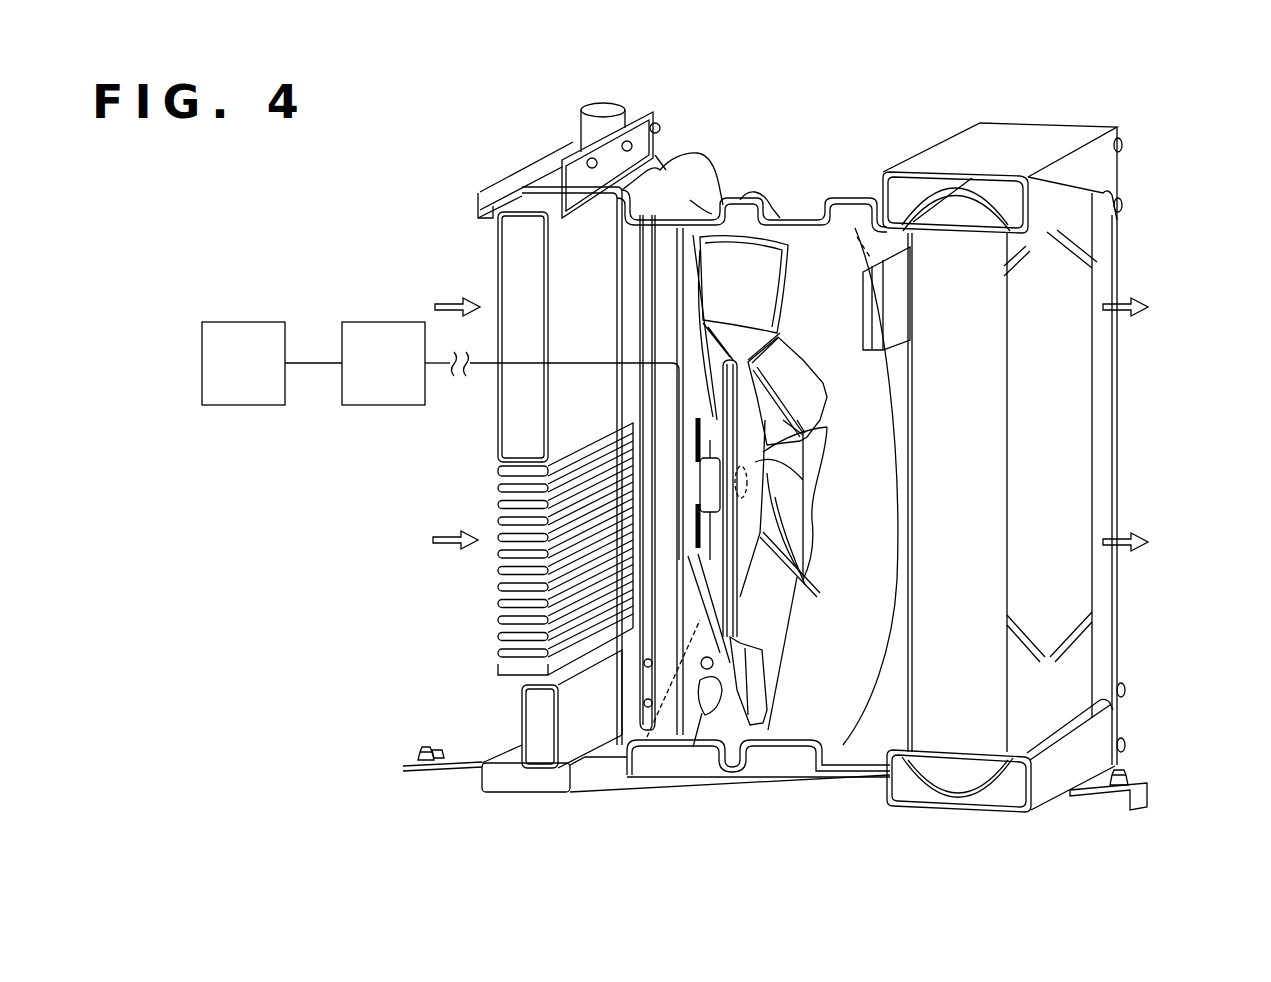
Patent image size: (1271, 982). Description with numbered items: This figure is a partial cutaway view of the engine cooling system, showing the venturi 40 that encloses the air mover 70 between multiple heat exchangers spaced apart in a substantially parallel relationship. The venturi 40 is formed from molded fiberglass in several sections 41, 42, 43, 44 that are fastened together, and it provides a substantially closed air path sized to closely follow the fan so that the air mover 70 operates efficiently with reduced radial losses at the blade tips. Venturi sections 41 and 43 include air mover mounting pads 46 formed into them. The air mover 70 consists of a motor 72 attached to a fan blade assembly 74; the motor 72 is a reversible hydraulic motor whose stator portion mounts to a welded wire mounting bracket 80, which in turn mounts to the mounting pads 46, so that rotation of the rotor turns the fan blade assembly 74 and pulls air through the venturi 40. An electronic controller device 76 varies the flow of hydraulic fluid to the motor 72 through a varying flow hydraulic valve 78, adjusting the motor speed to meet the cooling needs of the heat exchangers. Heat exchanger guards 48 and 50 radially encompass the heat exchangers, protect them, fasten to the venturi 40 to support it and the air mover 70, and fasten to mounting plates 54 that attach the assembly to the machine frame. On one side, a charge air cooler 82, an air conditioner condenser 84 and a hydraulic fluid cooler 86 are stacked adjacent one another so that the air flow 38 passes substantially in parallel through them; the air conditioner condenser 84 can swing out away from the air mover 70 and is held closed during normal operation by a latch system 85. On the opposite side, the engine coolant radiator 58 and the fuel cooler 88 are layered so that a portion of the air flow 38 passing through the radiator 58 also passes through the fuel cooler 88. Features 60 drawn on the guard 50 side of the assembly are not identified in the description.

The air flow 38 is at (444, 304).
The venturi 40 is at (718, 152).
The venturi section 41 is at (662, 201).
The venturi section 42 is at (800, 282).
The venturi section 43 is at (659, 614).
The venturi section 44 is at (810, 664).
The air mover mounting pads 46 is at (693, 747).
The heat exchanger guard 48 is at (505, 177).
The heat exchanger guard 50 is at (1043, 130).
The mounting plates 54 is at (462, 757).
The engine coolant radiator 58 is at (943, 446).
The diagonal brace 60 is at (1085, 270).
The air mover 70 is at (811, 354).
The motor 72 is at (700, 486).
The fan blade assembly 74 is at (731, 296).
The electronic controller device 76 is at (229, 377).
The varying flow hydraulic valve 78 is at (369, 377).
The mounting bracket 80 is at (697, 345).
The charge air cooler 82 is at (507, 286).
The air conditioner condenser 84 is at (498, 480).
The latch system 85 is at (640, 550).
The hydraulic fluid cooler 86 is at (526, 724).
The fuel cooler 88 is at (866, 350).